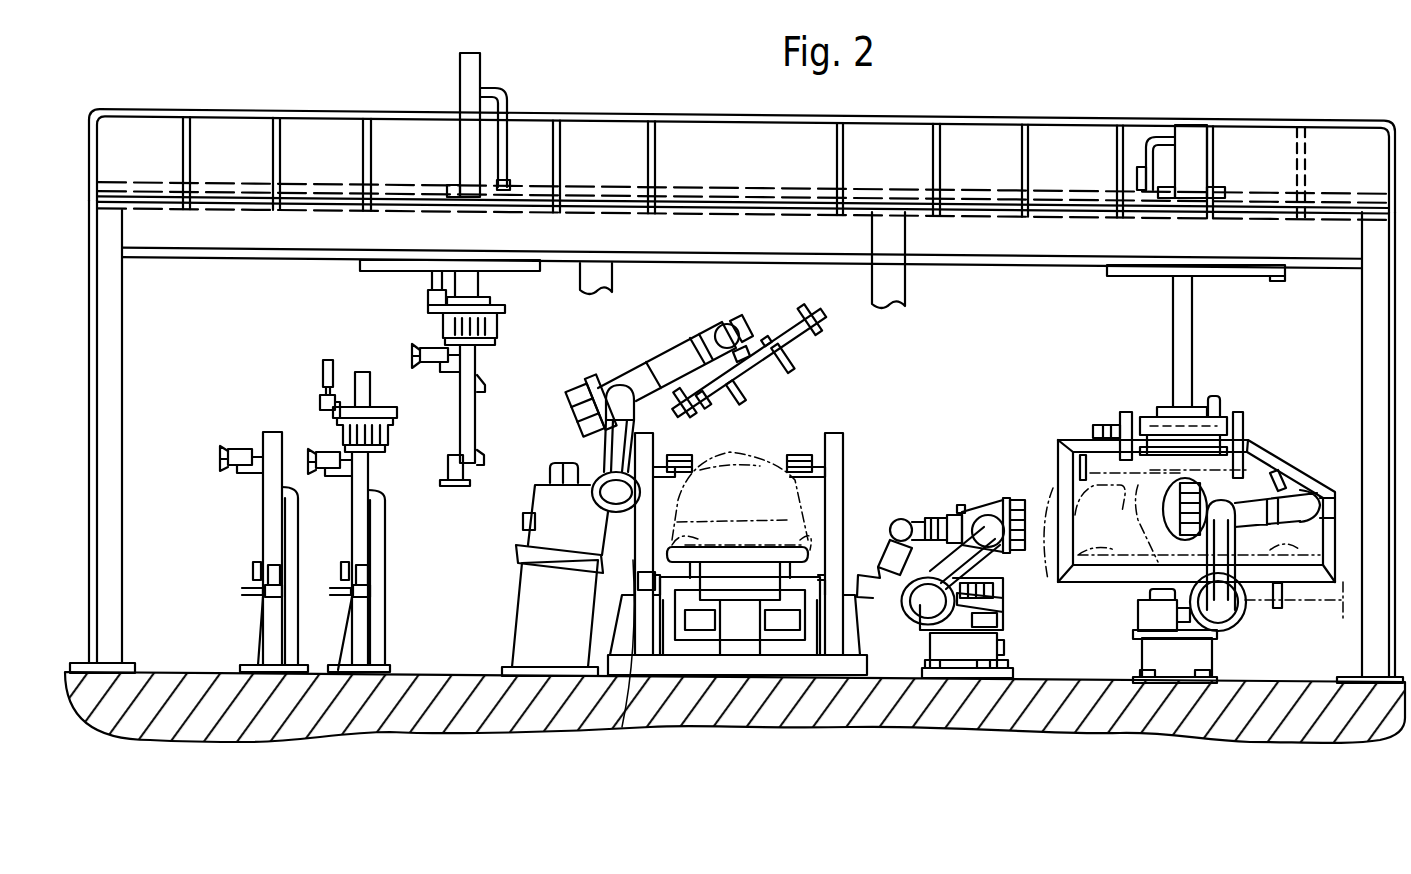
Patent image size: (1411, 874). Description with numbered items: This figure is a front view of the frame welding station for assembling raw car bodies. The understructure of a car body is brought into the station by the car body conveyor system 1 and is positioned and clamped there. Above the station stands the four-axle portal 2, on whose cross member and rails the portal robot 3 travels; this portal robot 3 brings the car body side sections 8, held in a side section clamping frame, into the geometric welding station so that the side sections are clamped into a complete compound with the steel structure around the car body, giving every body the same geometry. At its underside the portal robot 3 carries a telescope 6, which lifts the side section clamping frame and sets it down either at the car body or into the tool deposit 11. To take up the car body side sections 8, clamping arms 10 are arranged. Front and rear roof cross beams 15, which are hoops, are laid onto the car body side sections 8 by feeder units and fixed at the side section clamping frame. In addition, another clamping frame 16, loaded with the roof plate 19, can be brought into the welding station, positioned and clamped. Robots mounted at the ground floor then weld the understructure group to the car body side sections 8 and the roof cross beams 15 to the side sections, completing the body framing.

The car body conveyor system 1 is at (735, 667).
The four-axle portal 2 is at (1335, 238).
The portal robot 3 is at (468, 82).
The telescope 6 is at (465, 277).
The car body side sections 8 is at (1348, 617).
The clamping arms 10 is at (243, 475).
The tool deposit 11 is at (262, 597).
The roof cross beams 15 is at (704, 418).
The clamping frame 16 is at (802, 340).
The roof plate 19 is at (752, 440).